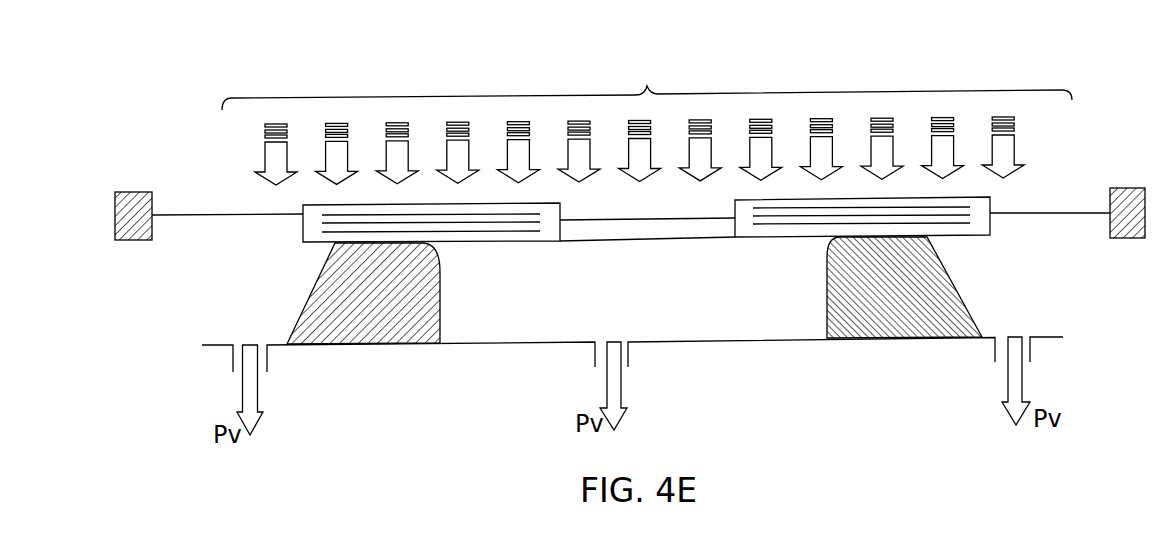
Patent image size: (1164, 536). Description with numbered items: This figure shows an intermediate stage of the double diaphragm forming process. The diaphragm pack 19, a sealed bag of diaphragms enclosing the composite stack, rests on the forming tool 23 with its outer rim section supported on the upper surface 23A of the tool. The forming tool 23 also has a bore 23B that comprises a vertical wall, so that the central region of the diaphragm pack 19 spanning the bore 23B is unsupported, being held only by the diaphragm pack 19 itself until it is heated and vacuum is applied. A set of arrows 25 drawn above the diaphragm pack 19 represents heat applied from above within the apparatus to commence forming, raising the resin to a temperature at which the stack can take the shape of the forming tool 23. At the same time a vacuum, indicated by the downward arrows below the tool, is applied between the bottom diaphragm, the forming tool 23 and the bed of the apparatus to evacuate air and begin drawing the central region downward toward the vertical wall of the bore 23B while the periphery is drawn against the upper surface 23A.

The diaphragm pack 19 is at (215, 213).
The set of arrows 25 is at (647, 86).
The forming tool 23 is at (886, 338).
The upper surface 23A is at (892, 237).
The bore 23B is at (827, 259).